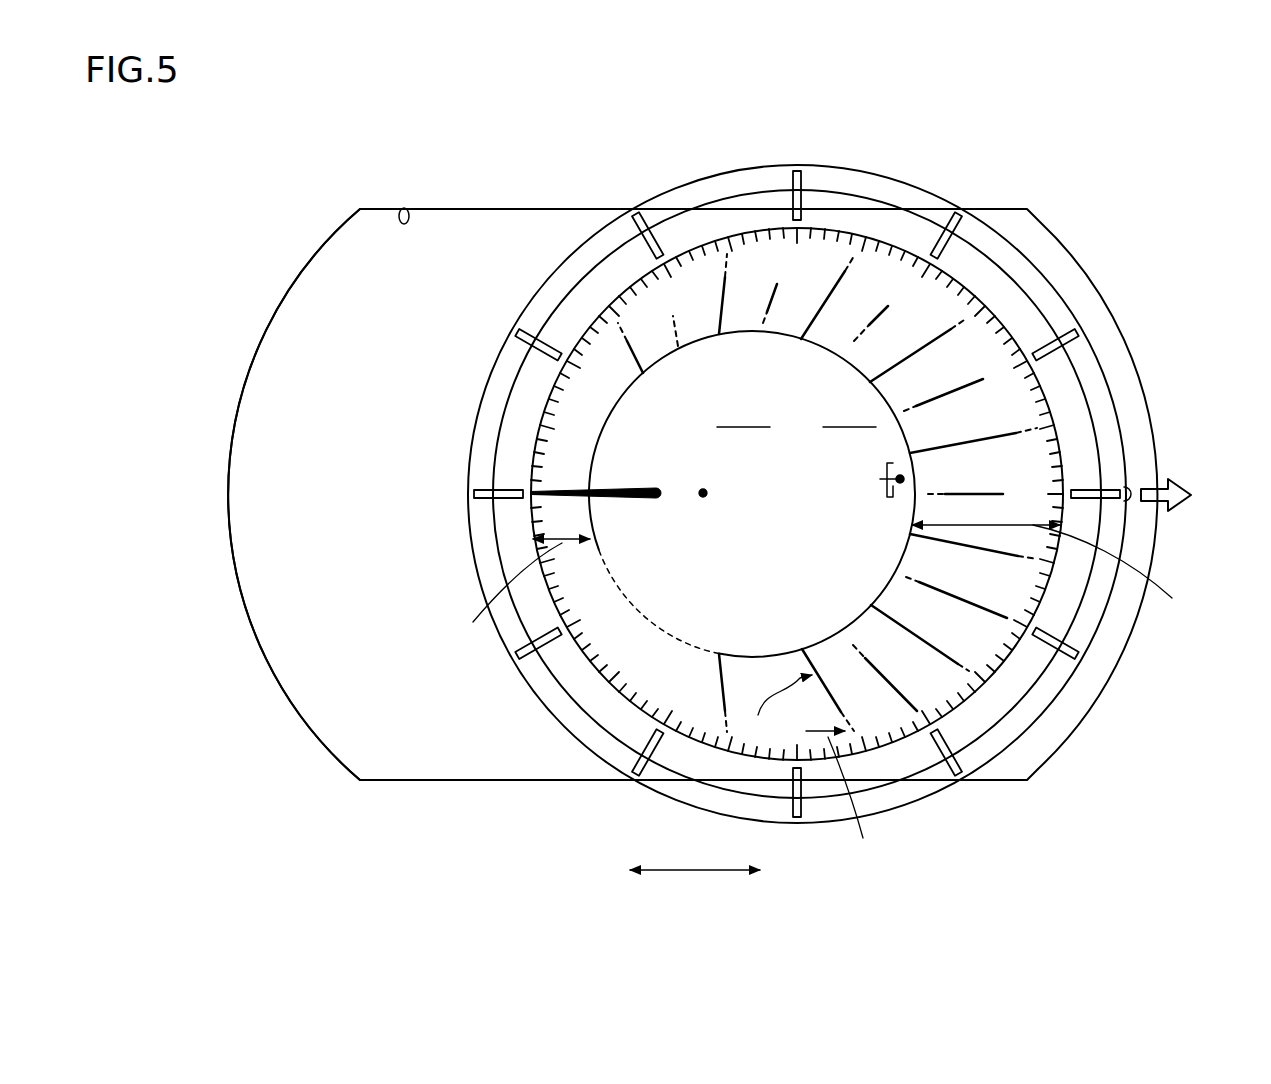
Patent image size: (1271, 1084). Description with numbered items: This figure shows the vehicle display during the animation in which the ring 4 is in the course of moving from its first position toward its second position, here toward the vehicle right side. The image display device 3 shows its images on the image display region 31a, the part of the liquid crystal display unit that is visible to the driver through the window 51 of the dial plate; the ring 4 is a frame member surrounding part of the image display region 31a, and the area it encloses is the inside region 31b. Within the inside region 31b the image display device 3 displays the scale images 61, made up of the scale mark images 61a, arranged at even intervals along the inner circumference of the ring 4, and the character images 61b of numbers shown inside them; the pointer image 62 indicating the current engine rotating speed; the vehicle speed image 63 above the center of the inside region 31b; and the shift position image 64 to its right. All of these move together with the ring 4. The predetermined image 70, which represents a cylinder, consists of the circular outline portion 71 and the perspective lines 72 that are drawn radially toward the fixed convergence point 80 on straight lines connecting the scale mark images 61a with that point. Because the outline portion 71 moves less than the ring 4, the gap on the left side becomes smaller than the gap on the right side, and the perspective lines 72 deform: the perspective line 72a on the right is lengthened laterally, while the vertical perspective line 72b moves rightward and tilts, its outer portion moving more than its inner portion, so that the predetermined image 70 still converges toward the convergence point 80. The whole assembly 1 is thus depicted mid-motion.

The display device 1 is at (306, 128).
The image display device 3 is at (264, 291).
The ring 4 is at (731, 164).
The image display region 31a is at (379, 233).
The inside region 31b is at (650, 303).
The window 51 is at (403, 207).
The scale images 61 is at (880, 93).
The scale mark images 61a is at (796, 229).
The character images 61b is at (887, 276).
The pointer image 62 is at (643, 500).
The vehicle speed image 63 is at (862, 358).
The shift position image 64 is at (906, 448).
The predetermined image 70 is at (715, 437).
The outline portion 71 is at (640, 384).
The perspective lines 72 is at (723, 322).
The perspective line 72a is at (985, 489).
The perspective line 72b is at (814, 672).
The convergence point 80 is at (709, 503).